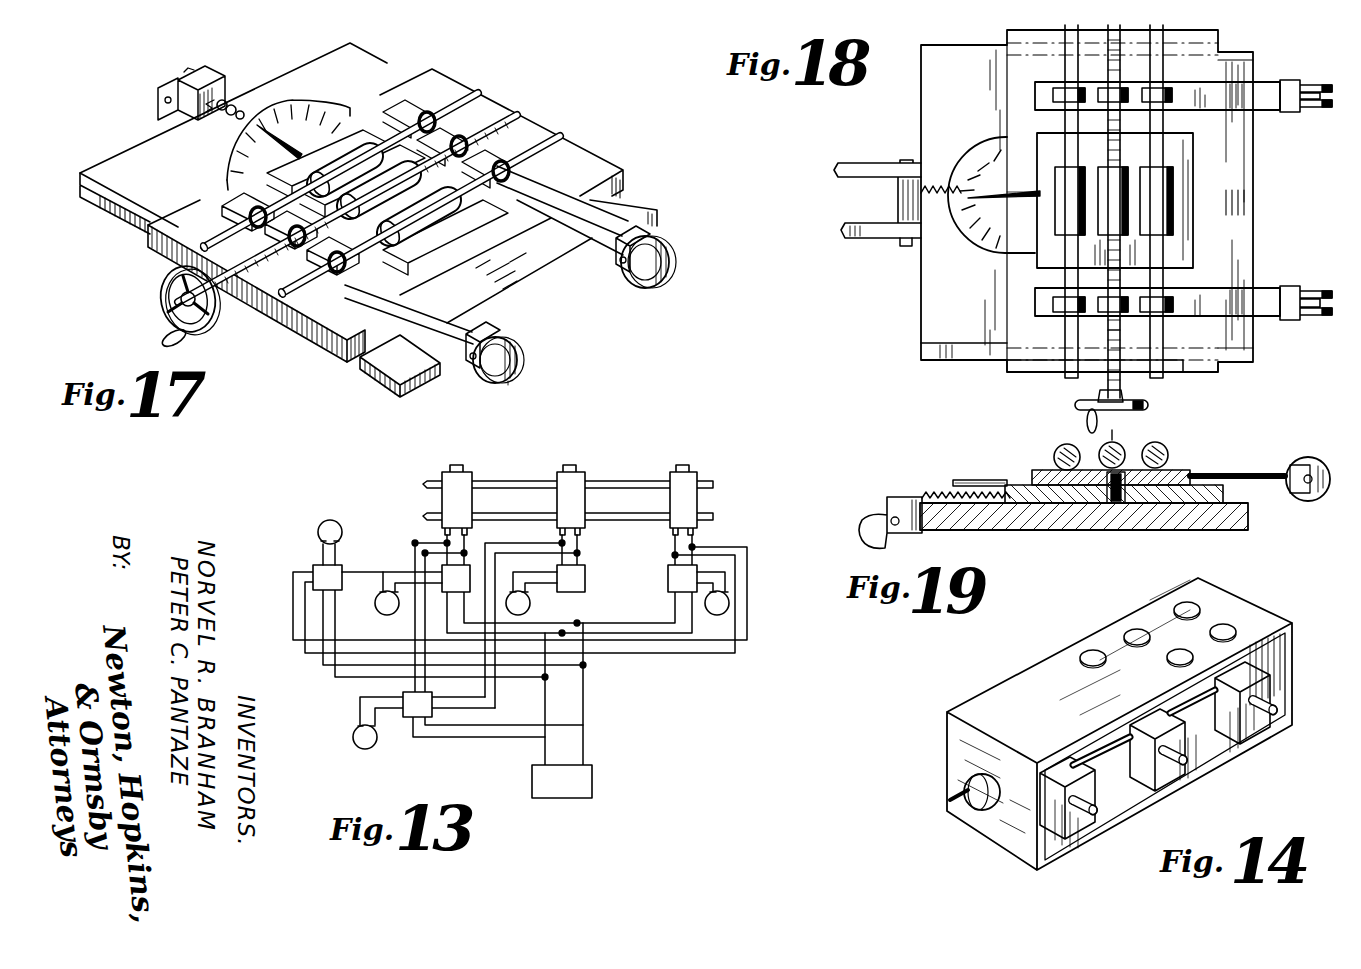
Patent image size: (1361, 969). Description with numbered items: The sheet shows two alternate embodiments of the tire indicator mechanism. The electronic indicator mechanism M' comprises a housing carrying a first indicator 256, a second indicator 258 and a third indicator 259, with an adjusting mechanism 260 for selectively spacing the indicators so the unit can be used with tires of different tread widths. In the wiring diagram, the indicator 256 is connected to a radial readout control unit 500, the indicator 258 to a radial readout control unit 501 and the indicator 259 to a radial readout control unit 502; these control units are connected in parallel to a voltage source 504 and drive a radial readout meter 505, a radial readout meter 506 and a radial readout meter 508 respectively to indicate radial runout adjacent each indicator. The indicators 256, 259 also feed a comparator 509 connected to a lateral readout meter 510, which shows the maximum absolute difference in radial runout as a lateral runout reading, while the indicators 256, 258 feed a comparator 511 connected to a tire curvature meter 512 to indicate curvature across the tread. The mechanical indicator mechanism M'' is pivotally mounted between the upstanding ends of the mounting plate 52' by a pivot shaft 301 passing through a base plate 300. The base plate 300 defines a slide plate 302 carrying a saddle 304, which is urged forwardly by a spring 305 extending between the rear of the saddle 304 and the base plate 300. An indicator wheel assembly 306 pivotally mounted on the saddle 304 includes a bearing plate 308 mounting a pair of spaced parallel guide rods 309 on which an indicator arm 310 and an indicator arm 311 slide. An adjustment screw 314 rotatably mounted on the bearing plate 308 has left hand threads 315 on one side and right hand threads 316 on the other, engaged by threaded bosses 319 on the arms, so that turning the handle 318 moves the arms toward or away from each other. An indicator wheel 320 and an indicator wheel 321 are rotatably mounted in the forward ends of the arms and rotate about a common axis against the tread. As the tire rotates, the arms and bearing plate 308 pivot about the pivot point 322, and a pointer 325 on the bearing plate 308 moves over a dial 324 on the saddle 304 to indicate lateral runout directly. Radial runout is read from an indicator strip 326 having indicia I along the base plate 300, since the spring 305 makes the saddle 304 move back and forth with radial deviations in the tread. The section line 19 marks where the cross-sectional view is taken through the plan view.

In FIG. 17, the base plate 300 is at (384, 386).
In FIG. 18, the base plate 300 is at (918, 330).
In FIG. 19, the base plate 300 is at (952, 532).
In FIG. 18, the pivot shaft 301 is at (910, 248).
In FIG. 17, the slide plate 302 is at (412, 364).
In FIG. 18, the slide plate 302 is at (968, 355).
In FIG. 18, the saddle 304 is at (1049, 370).
In FIG. 19, the saddle 304 is at (1225, 494).
In FIG. 17, the spring 305 is at (224, 110).
In FIG. 18, the spring 305 is at (942, 203).
In FIG. 19, the spring 305 is at (924, 496).
In FIG. 18, the indicator wheel assembly 306 is at (1198, 263).
In FIG. 18, the bearing plate 308 is at (1200, 137).
In FIG. 17, the guide rods 309 is at (484, 96).
In FIG. 18, the guide rods 309 is at (1065, 334).
In FIG. 19, the guide rods 309 is at (1055, 458).
In FIG. 17, the indicator arm 310 is at (428, 326).
In FIG. 18, the indicator arm 310 is at (1268, 310).
In FIG. 17, the indicator arm 311 is at (598, 205).
In FIG. 18, the indicator arm 311 is at (1272, 110).
In FIG. 19, the indicator arm 311 is at (1272, 476).
In FIG. 17, the adjustment screw 314 is at (266, 258).
In FIG. 18, the adjustment screw 314 is at (1124, 383).
In FIG. 19, the adjustment screw 314 is at (1135, 448).
In FIG. 18, the left hand threads 315 is at (1120, 330).
In FIG. 18, the right hand threads 316 is at (1112, 130).
In FIG. 17, the handle 318 is at (205, 330).
In FIG. 18, the handle 318 is at (1140, 408).
In FIG. 17, the threaded bosses 319 is at (476, 152).
In FIG. 18, the threaded bosses 319 is at (1110, 298).
In FIG. 19, the threaded bosses 319 is at (1110, 446).
In FIG. 17, the indicator wheel 320 is at (520, 356).
In FIG. 18, the indicator wheel 320 is at (1322, 290).
In FIG. 17, the indicator wheel 321 is at (670, 262).
In FIG. 18, the indicator wheel 321 is at (1322, 73).
In FIG. 19, the indicator wheel 321 is at (1308, 495).
In FIG. 19, the pivot point 322 is at (1125, 488).
In FIG. 17, the dial 324 is at (304, 110).
In FIG. 18, the dial 324 is at (985, 163).
In FIG. 19, the dial 324 is at (952, 481).
In FIG. 17, the pointer 325 is at (296, 142).
In FIG. 18, the pointer 325 is at (999, 201).
In FIG. 19, the pointer 325 is at (1006, 480).
In FIG. 17, the indicator strip 326 is at (512, 294).
In FIG. 18, the indicator strip 326 is at (1247, 188).
In FIG. 17, the mounting plate 52' is at (187, 82).
In FIG. 18, the mounting plate 52' is at (877, 203).
In FIG. 13, the first indicator 256 is at (443, 476).
In FIG. 14, the first indicator 256 is at (1232, 718).
In FIG. 13, the second indicator 258 is at (558, 476).
In FIG. 14, the second indicator 258 is at (1143, 772).
In FIG. 13, the third indicator 259 is at (698, 476).
In FIG. 14, the third indicator 259 is at (1048, 823).
In FIG. 14, the adjusting mechanism 260 is at (1002, 782).
In FIG. 13, the radial readout control unit 500 is at (466, 585).
In FIG. 13, the radial readout control unit 501 is at (581, 585).
In FIG. 13, the radial readout control unit 502 is at (693, 585).
In FIG. 13, the voltage source 504 is at (576, 789).
In FIG. 13, the radial readout meter 505 is at (380, 612).
In FIG. 14, the radial readout meter 505 is at (1213, 596).
In FIG. 13, the radial readout meter 506 is at (512, 604).
In FIG. 14, the radial readout meter 506 is at (1160, 624).
In FIG. 13, the radial readout meter 508 is at (712, 615).
In FIG. 14, the radial readout meter 508 is at (1084, 660).
In FIG. 13, the comparator 509 is at (338, 585).
In FIG. 13, the lateral readout meter 510 is at (342, 528).
In FIG. 13, the comparator 511 is at (428, 711).
In FIG. 14, the comparator 511 is at (1236, 630).
In FIG. 13, the tire curvature meter 512 is at (372, 744).
In FIG. 14, the tire curvature meter 512 is at (1168, 662).
In FIG. 18, the section line 19 is at (858, 191).
In FIG. 13, the indicator mechanism M' is at (568, 479).
In FIG. 14, the indicator mechanism M' is at (1119, 724).
In FIG. 17, the indicator mechanism M'' is at (518, 147).
In FIG. 18, the indicator mechanism M'' is at (897, 73).
In FIG. 17, the indicia I is at (533, 263).
In FIG. 18, the indicia I is at (1250, 210).